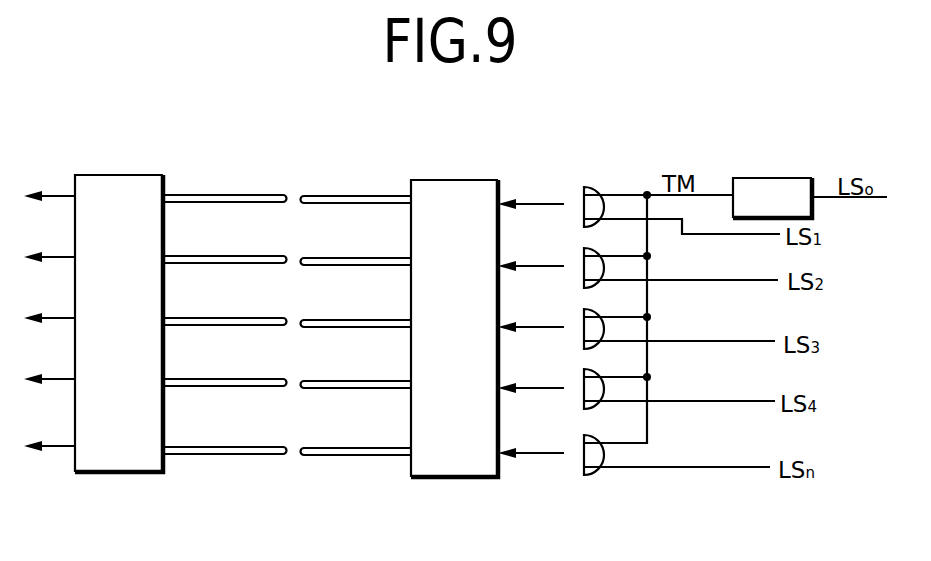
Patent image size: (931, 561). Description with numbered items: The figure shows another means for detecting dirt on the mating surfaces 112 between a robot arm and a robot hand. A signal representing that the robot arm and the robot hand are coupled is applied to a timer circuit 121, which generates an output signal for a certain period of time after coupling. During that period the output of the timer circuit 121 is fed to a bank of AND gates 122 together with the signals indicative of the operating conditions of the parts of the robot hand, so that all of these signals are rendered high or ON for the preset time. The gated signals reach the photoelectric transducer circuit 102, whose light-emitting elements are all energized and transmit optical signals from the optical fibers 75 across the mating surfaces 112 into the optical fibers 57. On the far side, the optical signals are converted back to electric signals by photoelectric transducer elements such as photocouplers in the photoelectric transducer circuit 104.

The photoelectric transducer circuit 104 is at (92, 336).
The photoelectric transducer circuit 102 is at (435, 339).
The optical fibers 57 is at (222, 454).
The optical fibers 75 is at (355, 455).
The mating surfaces 112 is at (297, 186).
The timer circuit 121 is at (765, 190).
The AND gates 122 is at (577, 473).